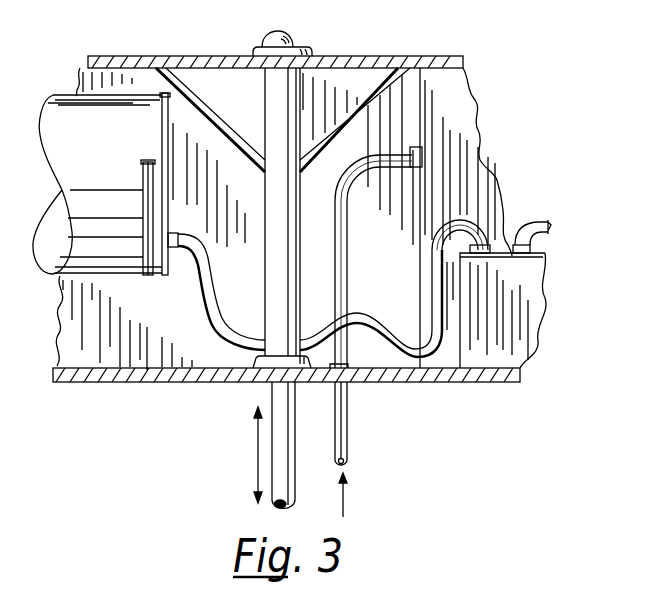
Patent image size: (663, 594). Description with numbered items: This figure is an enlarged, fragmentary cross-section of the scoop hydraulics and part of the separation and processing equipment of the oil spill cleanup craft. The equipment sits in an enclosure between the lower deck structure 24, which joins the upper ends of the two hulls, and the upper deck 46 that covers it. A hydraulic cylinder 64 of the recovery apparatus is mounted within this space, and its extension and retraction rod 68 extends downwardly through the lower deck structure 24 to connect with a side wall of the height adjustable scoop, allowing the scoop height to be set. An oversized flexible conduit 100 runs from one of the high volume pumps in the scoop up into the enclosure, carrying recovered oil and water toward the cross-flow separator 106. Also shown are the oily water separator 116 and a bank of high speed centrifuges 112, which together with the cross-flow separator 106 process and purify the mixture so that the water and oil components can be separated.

The upper deck 46 is at (372, 56).
The cross-flow separator 106 is at (478, 147).
The oily water separator 116 is at (101, 170).
The hydraulic cylinder 64 is at (272, 262).
The high speed centrifuges 112 is at (531, 281).
The lower deck structure 24 is at (441, 382).
The extension and retraction rod 68 is at (296, 440).
The conduit 100 is at (349, 428).